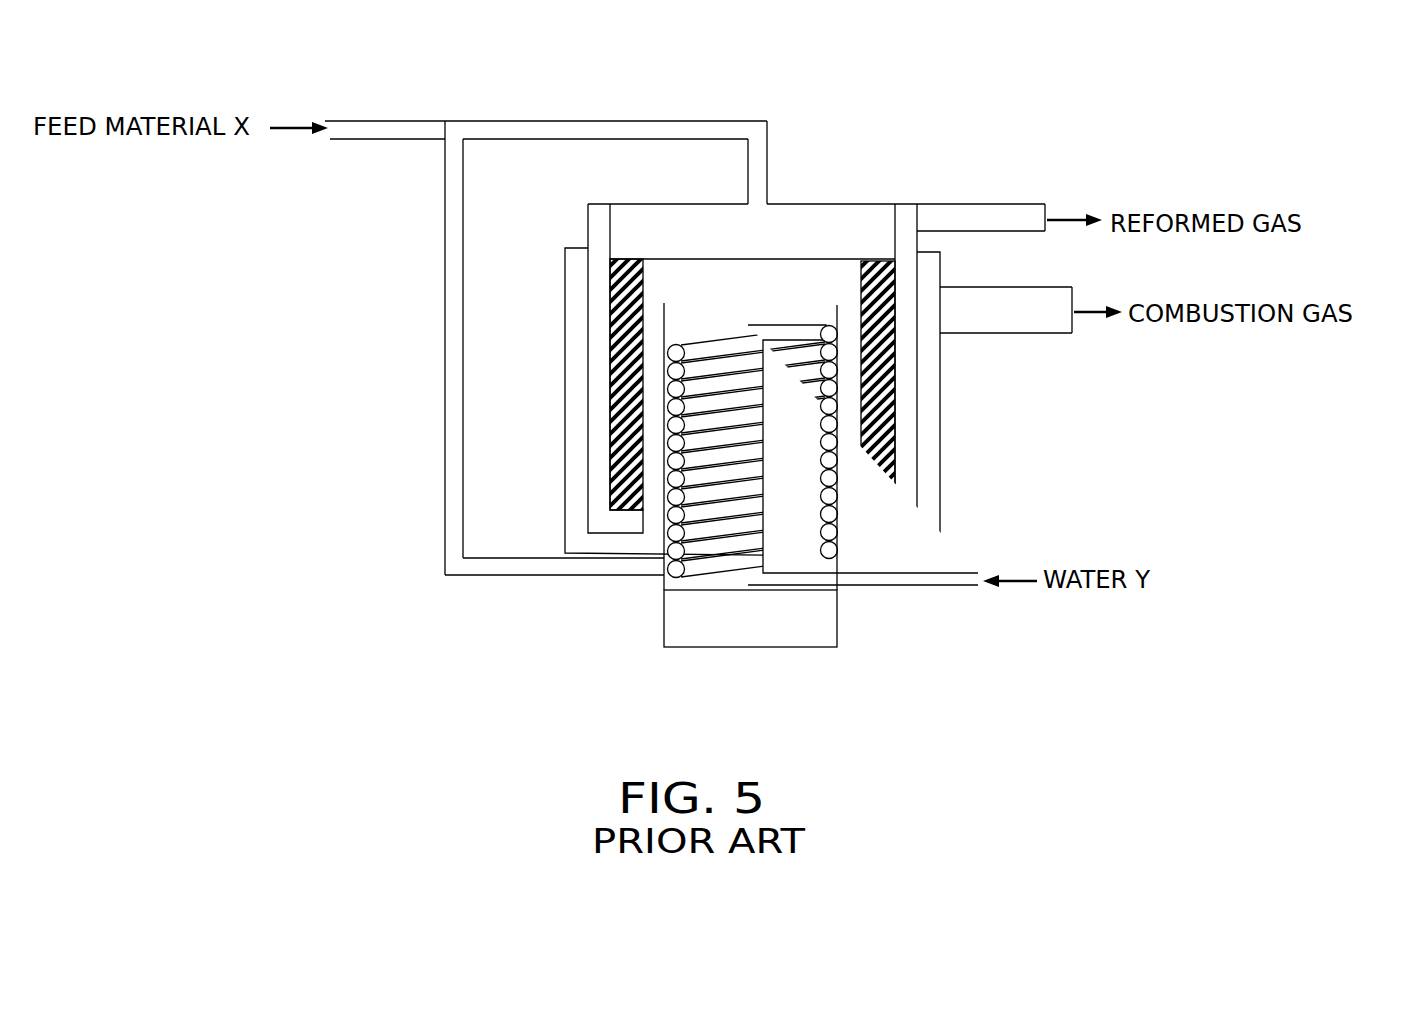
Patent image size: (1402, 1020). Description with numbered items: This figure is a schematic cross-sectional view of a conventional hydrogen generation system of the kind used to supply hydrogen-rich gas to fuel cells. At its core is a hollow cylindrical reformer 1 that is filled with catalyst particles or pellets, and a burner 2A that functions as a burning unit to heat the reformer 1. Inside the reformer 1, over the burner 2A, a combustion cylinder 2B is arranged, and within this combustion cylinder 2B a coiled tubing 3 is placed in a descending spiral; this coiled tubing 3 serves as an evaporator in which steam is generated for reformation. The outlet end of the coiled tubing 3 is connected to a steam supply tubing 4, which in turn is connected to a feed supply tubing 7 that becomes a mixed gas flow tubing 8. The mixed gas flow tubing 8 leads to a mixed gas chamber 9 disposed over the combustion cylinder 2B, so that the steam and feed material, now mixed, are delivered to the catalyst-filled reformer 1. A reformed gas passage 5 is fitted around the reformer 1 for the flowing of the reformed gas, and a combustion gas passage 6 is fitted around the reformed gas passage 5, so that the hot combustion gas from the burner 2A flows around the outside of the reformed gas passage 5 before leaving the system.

The reformer 1 is at (625, 395).
The burner 2A is at (743, 635).
The combustion cylinder 2B is at (760, 568).
The coiled tubing 3 is at (809, 487).
The steam supply tubing 4 is at (452, 450).
The reformed gas passage 5 is at (907, 433).
The combustion gas passage 6 is at (927, 503).
The feed supply tubing 7 is at (388, 120).
The mixed gas flow tubing 8 is at (600, 120).
The mixed gas chamber 9 is at (837, 204).